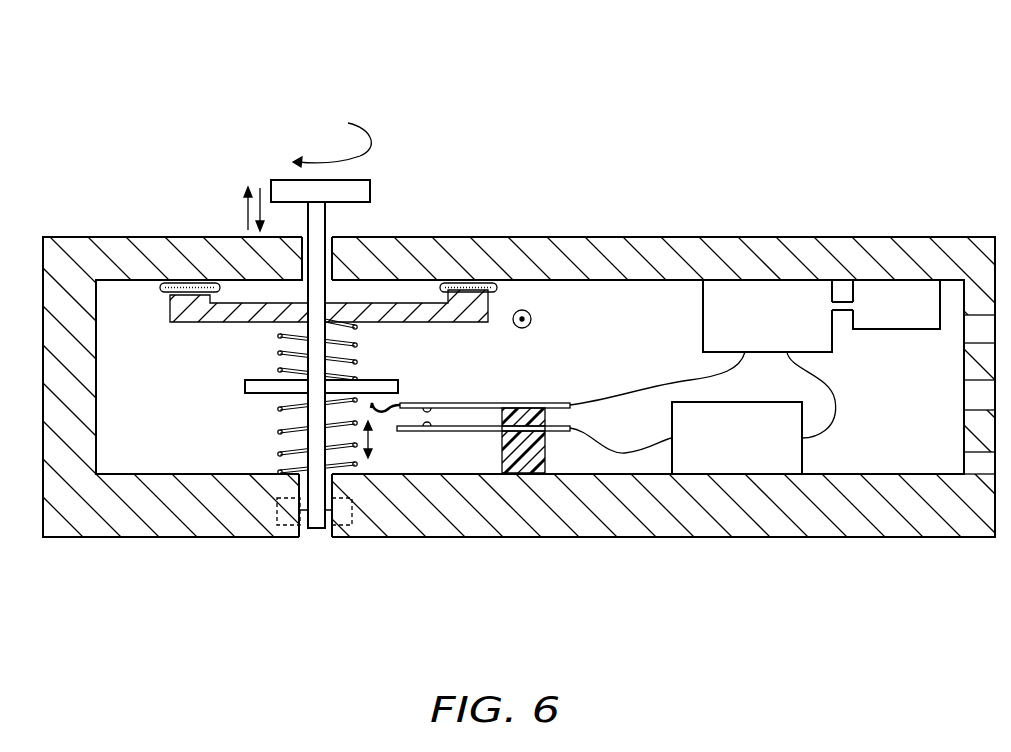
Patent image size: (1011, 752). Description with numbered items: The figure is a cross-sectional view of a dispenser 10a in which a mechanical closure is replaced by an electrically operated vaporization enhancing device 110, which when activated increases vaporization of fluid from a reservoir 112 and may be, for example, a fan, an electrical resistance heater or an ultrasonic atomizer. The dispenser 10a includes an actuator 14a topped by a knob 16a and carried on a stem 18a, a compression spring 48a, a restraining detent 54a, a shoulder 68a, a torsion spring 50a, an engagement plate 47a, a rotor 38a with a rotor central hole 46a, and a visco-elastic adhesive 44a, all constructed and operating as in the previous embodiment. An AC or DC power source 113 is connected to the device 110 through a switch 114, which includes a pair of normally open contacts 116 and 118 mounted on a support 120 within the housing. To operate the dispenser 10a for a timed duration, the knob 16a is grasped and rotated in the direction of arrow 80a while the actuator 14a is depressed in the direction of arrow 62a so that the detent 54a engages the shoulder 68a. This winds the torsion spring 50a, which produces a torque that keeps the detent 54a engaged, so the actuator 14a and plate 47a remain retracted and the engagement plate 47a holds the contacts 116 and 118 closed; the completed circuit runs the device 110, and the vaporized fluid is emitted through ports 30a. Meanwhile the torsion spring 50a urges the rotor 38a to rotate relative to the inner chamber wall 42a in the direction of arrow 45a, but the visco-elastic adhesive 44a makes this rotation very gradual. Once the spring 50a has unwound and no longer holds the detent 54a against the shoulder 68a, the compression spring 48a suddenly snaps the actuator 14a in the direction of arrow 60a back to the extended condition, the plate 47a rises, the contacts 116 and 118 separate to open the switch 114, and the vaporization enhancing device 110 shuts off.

The dispenser 10a is at (506, 47).
The actuator 14a is at (372, 186).
The knob 16a is at (355, 180).
The stem 18a is at (328, 219).
The ports 30a is at (967, 460).
The rotor 38a is at (230, 302).
The inner chamber wall 42a is at (121, 290).
The visco-elastic adhesive 44a is at (497, 288).
The arrow 45a is at (531, 318).
The rotor central hole 46a is at (333, 303).
The engagement plate 47a is at (245, 385).
The compression spring 48a is at (280, 430).
The torsion spring 50a is at (357, 352).
The restraining detent 54a is at (332, 518).
The arrow 60a is at (247, 212).
The arrow 62a is at (262, 206).
The shoulder 68a is at (340, 538).
The arrow 80a is at (342, 163).
The vaporization enhancing device 110 is at (703, 297).
The reservoir 112 is at (923, 330).
The power source 113 is at (735, 402).
The switch 114 is at (428, 397).
The contact 116 is at (457, 403).
The contact 118 is at (442, 431).
The support 120 is at (500, 452).